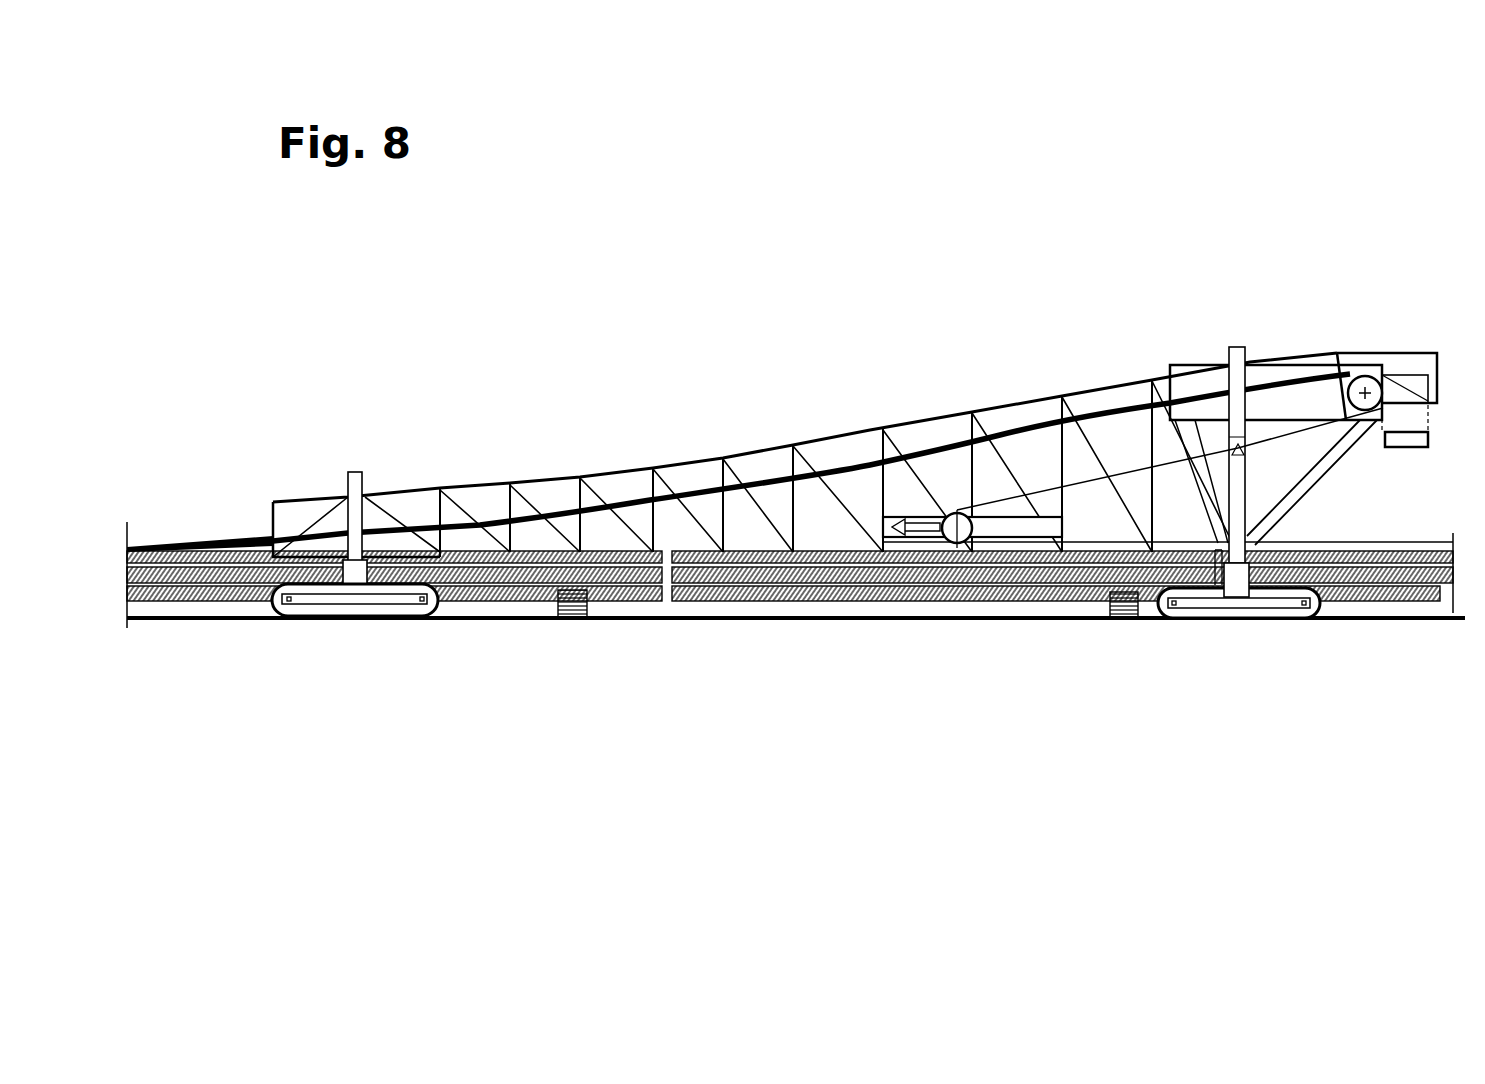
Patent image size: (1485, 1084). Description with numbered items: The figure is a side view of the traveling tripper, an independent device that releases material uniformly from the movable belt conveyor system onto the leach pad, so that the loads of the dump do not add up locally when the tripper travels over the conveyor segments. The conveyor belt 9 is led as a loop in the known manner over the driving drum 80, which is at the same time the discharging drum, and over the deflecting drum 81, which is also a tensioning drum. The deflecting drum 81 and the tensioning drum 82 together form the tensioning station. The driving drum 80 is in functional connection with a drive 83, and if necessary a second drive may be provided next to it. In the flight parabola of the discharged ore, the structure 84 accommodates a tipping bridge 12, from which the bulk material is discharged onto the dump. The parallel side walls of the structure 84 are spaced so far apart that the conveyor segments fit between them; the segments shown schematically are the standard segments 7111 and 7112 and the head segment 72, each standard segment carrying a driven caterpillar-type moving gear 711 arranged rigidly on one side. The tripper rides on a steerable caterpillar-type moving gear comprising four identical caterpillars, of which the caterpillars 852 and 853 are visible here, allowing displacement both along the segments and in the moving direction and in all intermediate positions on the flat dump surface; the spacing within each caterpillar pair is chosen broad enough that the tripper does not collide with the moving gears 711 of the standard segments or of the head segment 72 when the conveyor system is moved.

The conveyor belt 9 is at (832, 453).
The structure 84 is at (888, 425).
The drive 83 is at (1270, 375).
The driving drum 80 is at (1363, 376).
The tipping bridge 12 is at (1419, 375).
The caterpillar 852 is at (307, 607).
The caterpillar 853 is at (1245, 612).
The standard segment 7111 is at (394, 622).
The standard segment 7112 is at (1062, 628).
The caterpillar-type moving gear 711 is at (566, 618).
The tensioning drum 82 is at (910, 542).
The deflecting drum 81 is at (957, 541).
The head segment 72 is at (1428, 590).